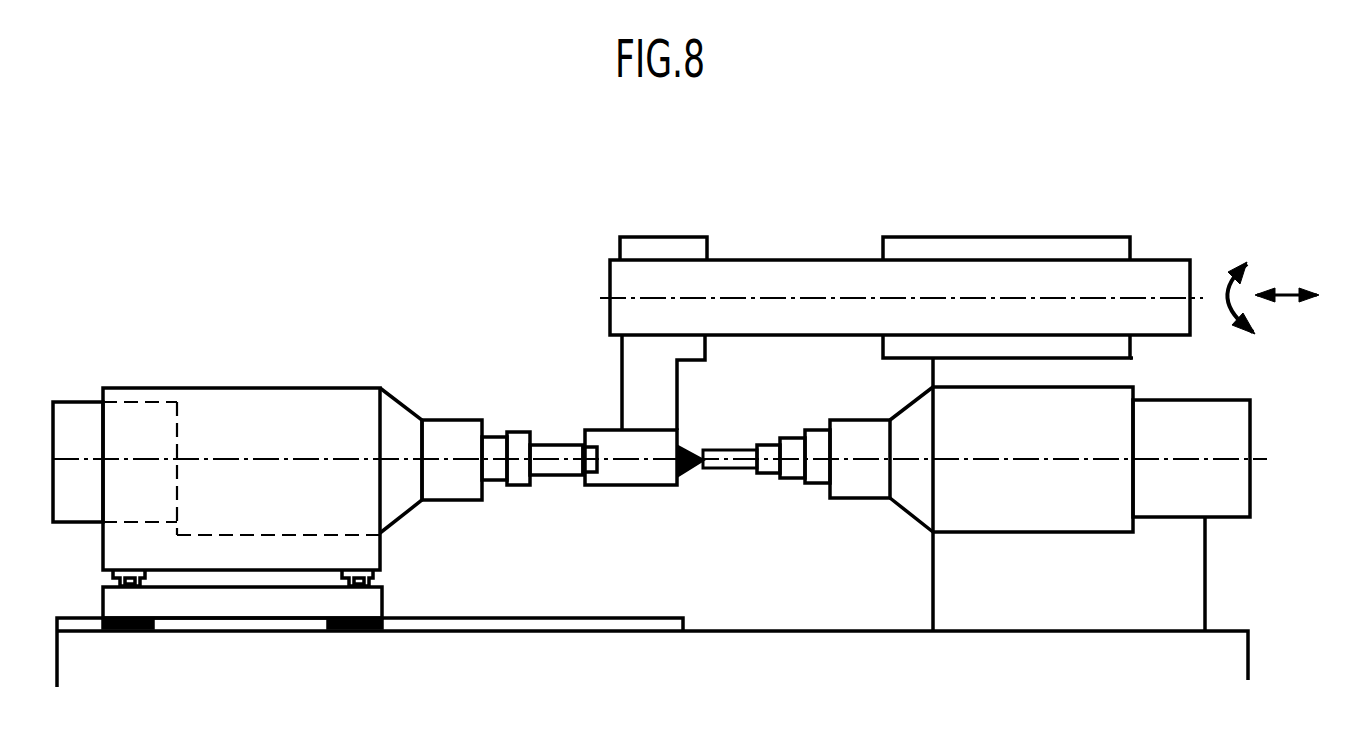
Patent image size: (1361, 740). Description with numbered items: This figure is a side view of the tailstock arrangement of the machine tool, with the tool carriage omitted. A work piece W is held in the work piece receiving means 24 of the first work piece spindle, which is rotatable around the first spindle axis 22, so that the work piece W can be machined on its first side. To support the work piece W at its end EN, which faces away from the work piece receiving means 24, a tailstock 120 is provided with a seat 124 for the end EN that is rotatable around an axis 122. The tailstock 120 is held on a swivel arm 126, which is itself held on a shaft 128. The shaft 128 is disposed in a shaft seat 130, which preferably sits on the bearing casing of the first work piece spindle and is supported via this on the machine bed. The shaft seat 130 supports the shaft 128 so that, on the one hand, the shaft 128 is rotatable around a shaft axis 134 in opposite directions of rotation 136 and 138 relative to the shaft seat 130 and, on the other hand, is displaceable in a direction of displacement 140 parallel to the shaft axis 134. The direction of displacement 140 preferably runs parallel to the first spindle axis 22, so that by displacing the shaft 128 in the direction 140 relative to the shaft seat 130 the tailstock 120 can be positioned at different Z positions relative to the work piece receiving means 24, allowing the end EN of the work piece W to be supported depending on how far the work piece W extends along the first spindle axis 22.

The first spindle axis 22 is at (1040, 458).
The work piece receiving means 24 is at (868, 472).
The work piece W is at (815, 472).
The end of the work piece EN is at (700, 450).
The tailstock 120 is at (633, 475).
The axis 122 is at (620, 462).
The seat 124 is at (695, 470).
The swivel arm 126 is at (633, 396).
The shaft 128 is at (800, 280).
The shaft seat 130 is at (1063, 248).
The shaft axis 134 is at (1097, 295).
The direction of rotation 136 is at (1225, 268).
The direction of rotation 138 is at (1228, 322).
The direction of displacement 140 is at (1287, 293).